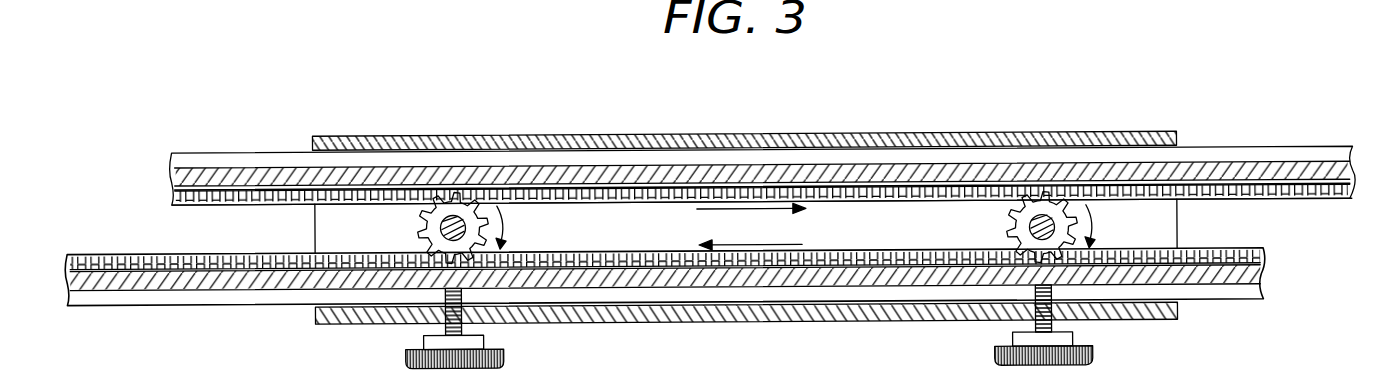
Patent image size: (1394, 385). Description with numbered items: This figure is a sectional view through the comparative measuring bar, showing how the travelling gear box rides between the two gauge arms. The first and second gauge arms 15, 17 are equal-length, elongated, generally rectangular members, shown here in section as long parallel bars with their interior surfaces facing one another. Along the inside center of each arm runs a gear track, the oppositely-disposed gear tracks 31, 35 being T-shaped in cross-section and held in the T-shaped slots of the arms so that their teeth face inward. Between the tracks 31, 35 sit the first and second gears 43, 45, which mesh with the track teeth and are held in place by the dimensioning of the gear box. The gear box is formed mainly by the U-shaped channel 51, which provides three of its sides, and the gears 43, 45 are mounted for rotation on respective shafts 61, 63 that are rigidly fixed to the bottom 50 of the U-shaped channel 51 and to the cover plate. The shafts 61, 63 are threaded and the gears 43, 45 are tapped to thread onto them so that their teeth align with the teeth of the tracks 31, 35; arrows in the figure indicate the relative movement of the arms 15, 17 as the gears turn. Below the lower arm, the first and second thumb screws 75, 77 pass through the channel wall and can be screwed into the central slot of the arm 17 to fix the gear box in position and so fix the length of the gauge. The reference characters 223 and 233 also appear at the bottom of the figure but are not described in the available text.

The first gauge arm 15 is at (1222, 152).
The second gauge arm 17 is at (1215, 306).
The first gear track 31 is at (1307, 203).
The second gear track 35 is at (1258, 244).
The first gear 43 is at (417, 229).
The second gear 45 is at (1010, 232).
The bottom of the U-shaped channel 50 is at (1153, 225).
The U-shaped channel 51 is at (1144, 128).
The first shaft 61 is at (453, 214).
The second shaft 63 is at (1042, 216).
The first thumb screw 75 is at (994, 353).
The second thumb screw 77 is at (505, 352).
The slot 223 is at (410, 384).
The tab 233 is at (451, 376).